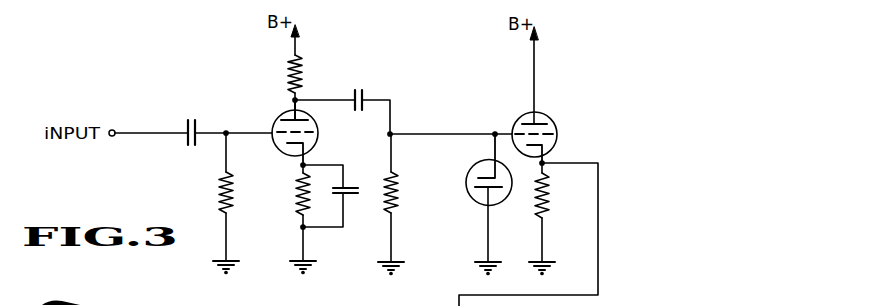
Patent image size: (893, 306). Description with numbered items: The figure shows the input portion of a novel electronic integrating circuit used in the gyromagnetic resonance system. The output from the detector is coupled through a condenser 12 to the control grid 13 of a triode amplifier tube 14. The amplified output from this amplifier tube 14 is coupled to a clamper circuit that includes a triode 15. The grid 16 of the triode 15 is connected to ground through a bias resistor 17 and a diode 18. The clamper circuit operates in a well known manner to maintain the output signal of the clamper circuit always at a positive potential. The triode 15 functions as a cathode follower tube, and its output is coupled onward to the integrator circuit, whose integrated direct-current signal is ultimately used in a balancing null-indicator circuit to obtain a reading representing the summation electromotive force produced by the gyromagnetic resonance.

The condenser 12 is at (188, 127).
The control grid 13 is at (276, 128).
The triode amplifier tube 14 is at (283, 153).
The triode 15 is at (525, 113).
The grid 16 is at (514, 128).
The bias resistor 17 is at (398, 192).
The diode 18 is at (510, 194).